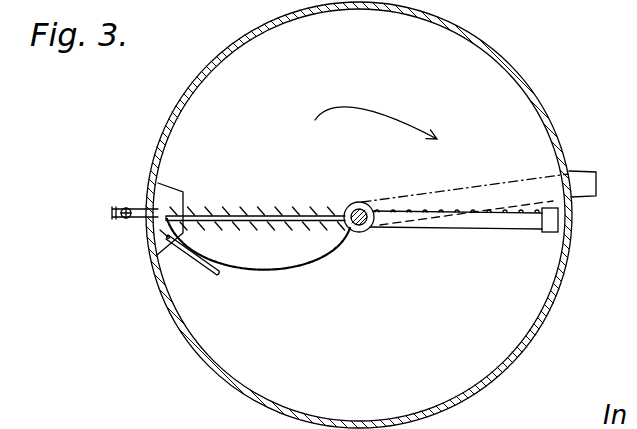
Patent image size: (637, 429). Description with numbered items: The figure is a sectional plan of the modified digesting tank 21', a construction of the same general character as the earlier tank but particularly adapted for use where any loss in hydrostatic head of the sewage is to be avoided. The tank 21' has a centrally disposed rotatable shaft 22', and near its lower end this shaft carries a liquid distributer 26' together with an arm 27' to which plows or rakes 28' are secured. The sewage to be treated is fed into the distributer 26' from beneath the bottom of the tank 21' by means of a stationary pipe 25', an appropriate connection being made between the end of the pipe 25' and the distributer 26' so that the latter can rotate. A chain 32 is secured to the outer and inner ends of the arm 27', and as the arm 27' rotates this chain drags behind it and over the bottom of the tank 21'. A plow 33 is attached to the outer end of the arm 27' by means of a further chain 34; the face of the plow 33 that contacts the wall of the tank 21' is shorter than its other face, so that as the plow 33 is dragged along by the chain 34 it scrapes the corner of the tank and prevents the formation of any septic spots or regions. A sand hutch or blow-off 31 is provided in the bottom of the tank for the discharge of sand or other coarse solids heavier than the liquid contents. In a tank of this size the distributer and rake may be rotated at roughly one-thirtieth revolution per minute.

The digesting tank 21' is at (338, 215).
The rotatable shaft 22' is at (370, 186).
The pipe 25' is at (479, 176).
The liquid distributer 26' is at (464, 241).
The arm 27' is at (255, 184).
The plows or rakes 28' is at (257, 190).
The sand hutch or blow-off 31 is at (168, 186).
The chain 32 is at (288, 265).
The plow 33 is at (198, 262).
The chain 34 is at (165, 224).